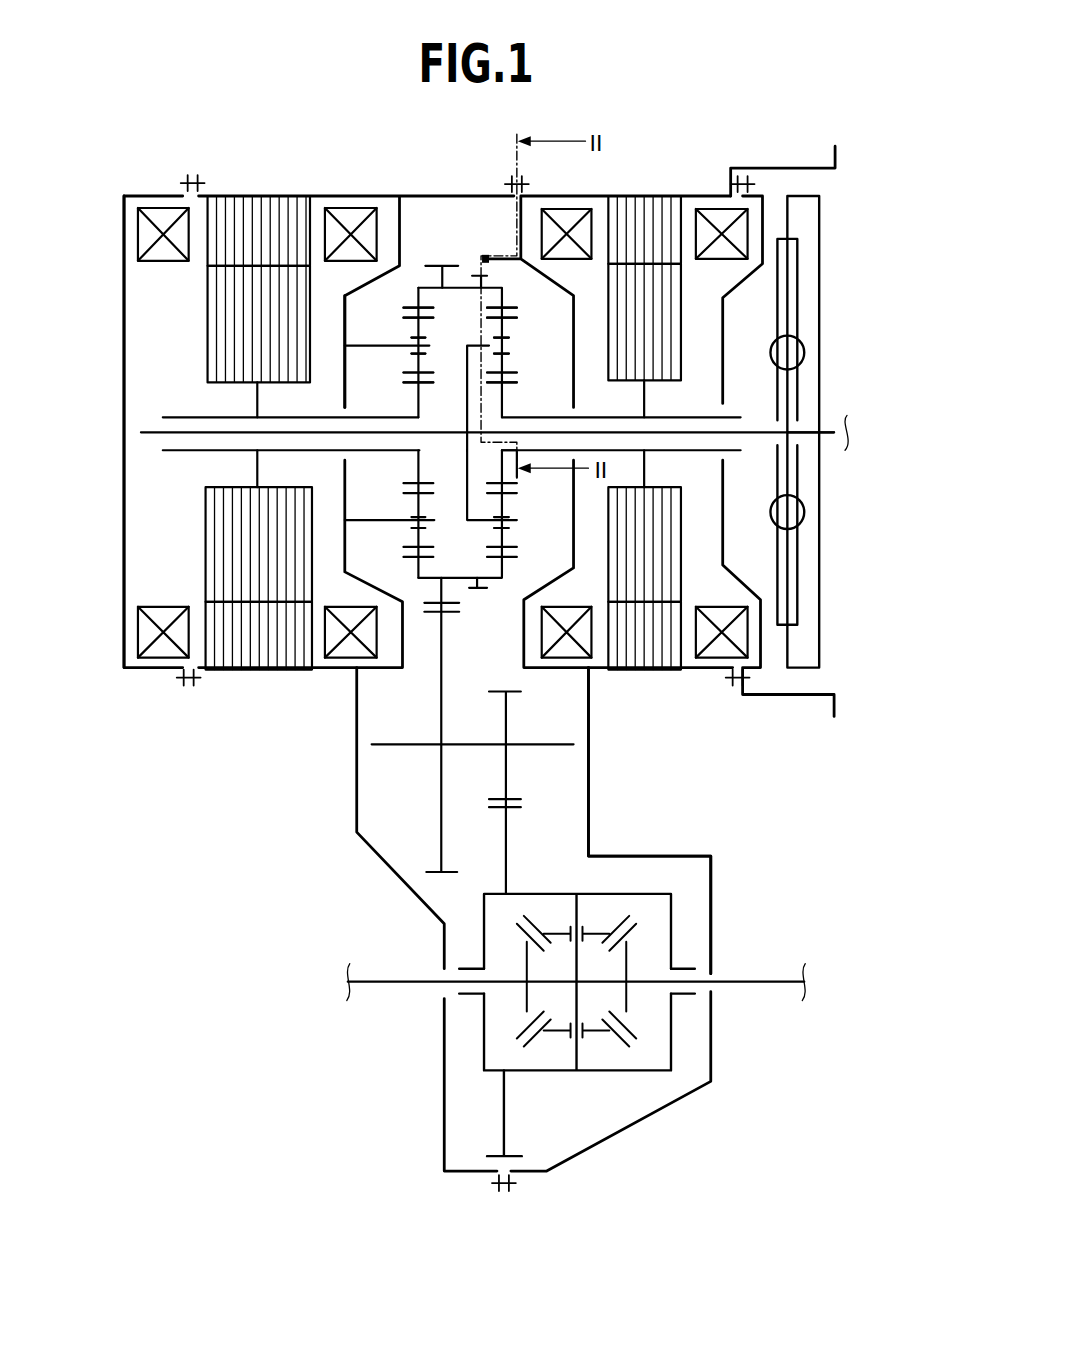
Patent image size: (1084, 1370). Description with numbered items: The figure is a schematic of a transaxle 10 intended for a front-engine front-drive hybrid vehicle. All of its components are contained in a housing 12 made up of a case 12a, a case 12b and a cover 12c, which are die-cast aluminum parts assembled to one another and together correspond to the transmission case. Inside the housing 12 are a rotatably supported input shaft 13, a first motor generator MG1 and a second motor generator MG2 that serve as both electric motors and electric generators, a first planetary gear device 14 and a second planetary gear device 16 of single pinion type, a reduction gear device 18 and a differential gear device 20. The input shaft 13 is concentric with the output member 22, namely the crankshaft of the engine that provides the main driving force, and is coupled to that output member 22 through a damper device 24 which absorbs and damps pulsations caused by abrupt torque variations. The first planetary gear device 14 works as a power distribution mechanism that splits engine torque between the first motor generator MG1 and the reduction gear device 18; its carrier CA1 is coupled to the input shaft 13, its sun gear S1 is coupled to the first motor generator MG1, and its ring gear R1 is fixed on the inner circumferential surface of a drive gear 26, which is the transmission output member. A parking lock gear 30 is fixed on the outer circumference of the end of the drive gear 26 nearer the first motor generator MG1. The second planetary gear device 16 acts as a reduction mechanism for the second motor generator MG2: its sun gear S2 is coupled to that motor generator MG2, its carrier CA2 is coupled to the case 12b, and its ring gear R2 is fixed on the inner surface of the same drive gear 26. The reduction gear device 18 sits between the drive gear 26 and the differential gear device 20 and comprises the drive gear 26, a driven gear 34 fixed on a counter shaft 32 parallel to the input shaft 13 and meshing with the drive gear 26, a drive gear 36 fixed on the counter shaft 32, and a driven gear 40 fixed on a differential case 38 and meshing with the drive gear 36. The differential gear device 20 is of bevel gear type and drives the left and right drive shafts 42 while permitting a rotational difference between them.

The transaxle 10 is at (659, 145).
The housing 12 is at (318, 188).
The case 12a is at (778, 167).
The case 12b is at (372, 195).
The cover 12c is at (145, 195).
The input shaft 13 is at (758, 437).
The first planetary gear device 14 is at (513, 588).
The second planetary gear device 16 is at (413, 598).
The reduction gear device 18 is at (402, 823).
The differential gear device 20 is at (601, 1100).
The output member 22 is at (845, 430).
The damper device 24 is at (780, 660).
The drive gear 26 is at (443, 265).
The parking lock gear 30 is at (474, 272).
The counter shaft 32 is at (555, 745).
The driven gear 34 is at (430, 875).
The drive gear 36 is at (512, 690).
The differential case 38 is at (652, 895).
The driven gear 40 is at (520, 810).
The drive shafts 42 is at (398, 983).
The ring gear R1 is at (510, 305).
The carrier CA1 is at (543, 345).
The sun gear S1 is at (512, 385).
The ring gear R2 is at (410, 305).
The carrier CA2 is at (413, 345).
The sun gear S2 is at (410, 385).
The first motor generator MG1 is at (654, 688).
The second motor generator MG2 is at (258, 688).